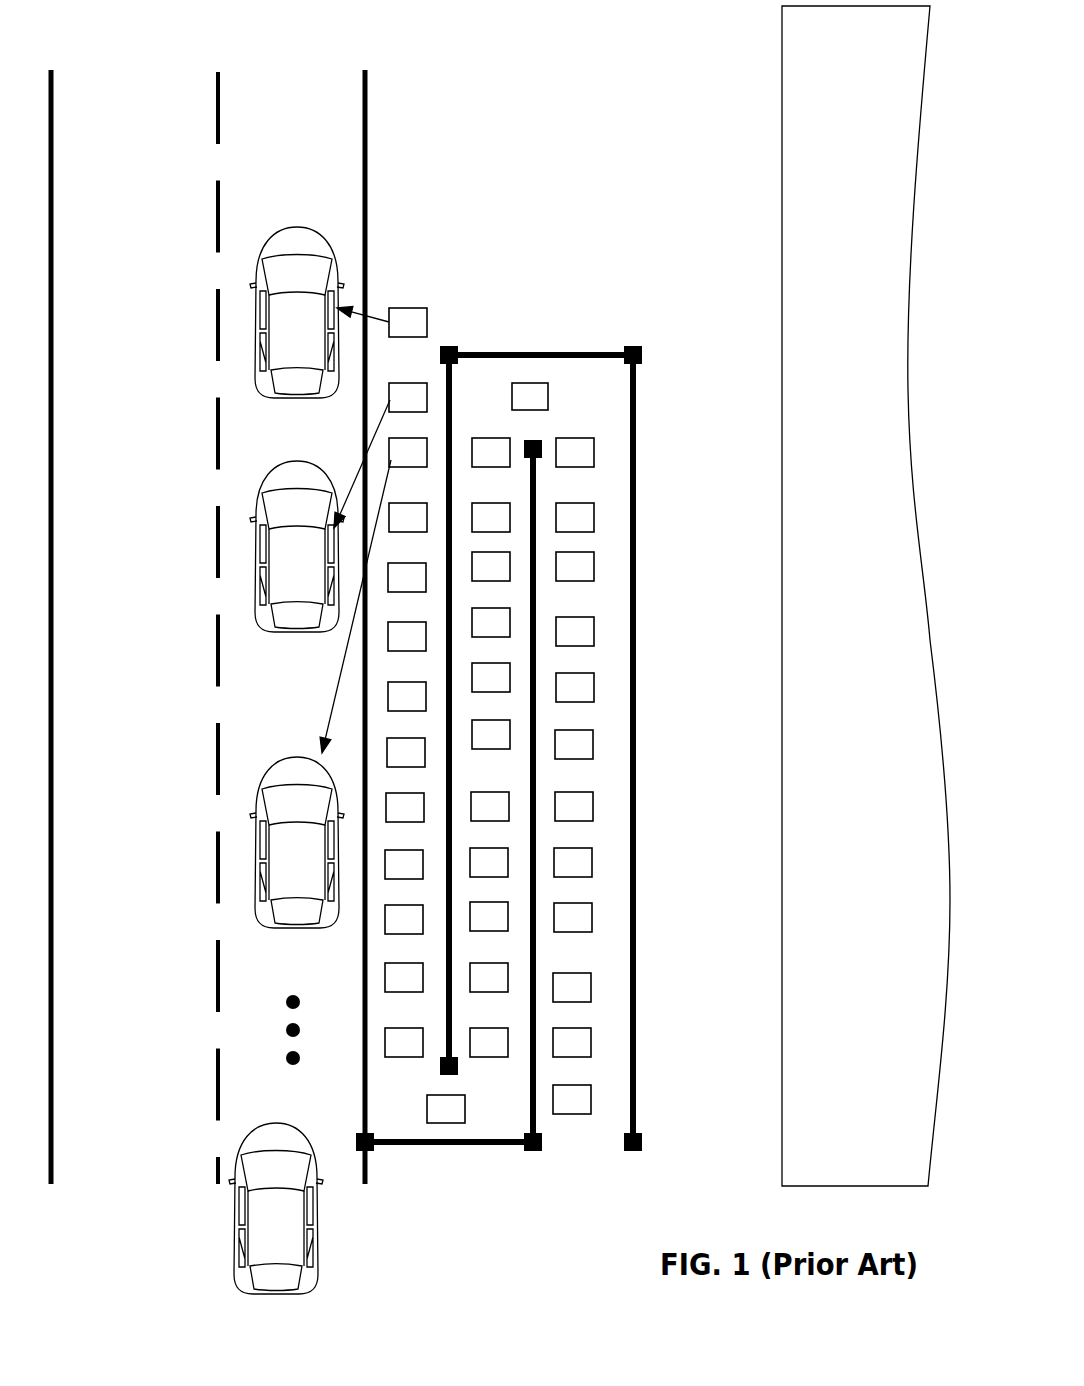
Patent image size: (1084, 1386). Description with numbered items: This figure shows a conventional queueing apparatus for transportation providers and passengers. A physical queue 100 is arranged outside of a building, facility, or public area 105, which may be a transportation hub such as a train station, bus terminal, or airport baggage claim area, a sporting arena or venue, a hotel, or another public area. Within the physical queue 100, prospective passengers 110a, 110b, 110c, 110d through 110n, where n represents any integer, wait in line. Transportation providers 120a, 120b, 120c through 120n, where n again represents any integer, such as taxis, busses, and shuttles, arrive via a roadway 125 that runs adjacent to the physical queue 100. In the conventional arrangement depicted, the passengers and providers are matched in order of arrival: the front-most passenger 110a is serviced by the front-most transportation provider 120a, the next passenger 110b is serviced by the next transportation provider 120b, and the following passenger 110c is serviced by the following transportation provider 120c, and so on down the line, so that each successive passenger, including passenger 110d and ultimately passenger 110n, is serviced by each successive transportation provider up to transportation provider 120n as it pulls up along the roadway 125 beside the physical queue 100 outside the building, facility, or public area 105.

The physical queue 100 is at (579, 289).
The building, facility, or public area 105 is at (868, 713).
The front-most passenger 110a is at (410, 308).
The next passenger 110b is at (412, 383).
The following passenger 110c is at (389, 452).
The prospective passenger 110d is at (429, 517).
The prospective passenger 110n is at (591, 1100).
The front-most transportation provider 120a is at (252, 297).
The next transportation provider 120b is at (254, 605).
The following transportation provider 120c is at (254, 905).
The transportation provider 120n is at (270, 1140).
The roadway 125 is at (154, 107).